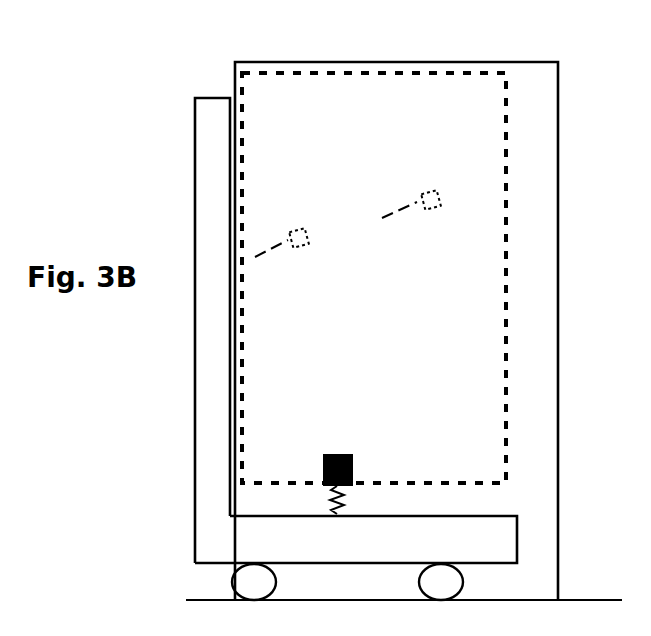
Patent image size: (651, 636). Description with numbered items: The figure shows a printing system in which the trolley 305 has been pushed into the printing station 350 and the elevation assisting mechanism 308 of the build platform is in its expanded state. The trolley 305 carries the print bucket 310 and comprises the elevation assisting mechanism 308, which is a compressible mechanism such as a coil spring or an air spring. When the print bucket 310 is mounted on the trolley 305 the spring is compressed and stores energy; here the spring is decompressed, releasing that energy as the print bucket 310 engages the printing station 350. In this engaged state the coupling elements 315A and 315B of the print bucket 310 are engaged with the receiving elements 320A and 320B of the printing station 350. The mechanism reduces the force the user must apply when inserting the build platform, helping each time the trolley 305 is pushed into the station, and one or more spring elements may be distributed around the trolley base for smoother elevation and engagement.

The trolley 305 is at (194, 98).
The elevation assisting mechanism 308 is at (350, 454).
The print bucket 310 is at (508, 74).
The coupling element 315A is at (300, 230).
The coupling element 315B is at (437, 190).
The receiving element 320A is at (276, 252).
The receiving element 320B is at (400, 220).
The printing station 350 is at (558, 110).